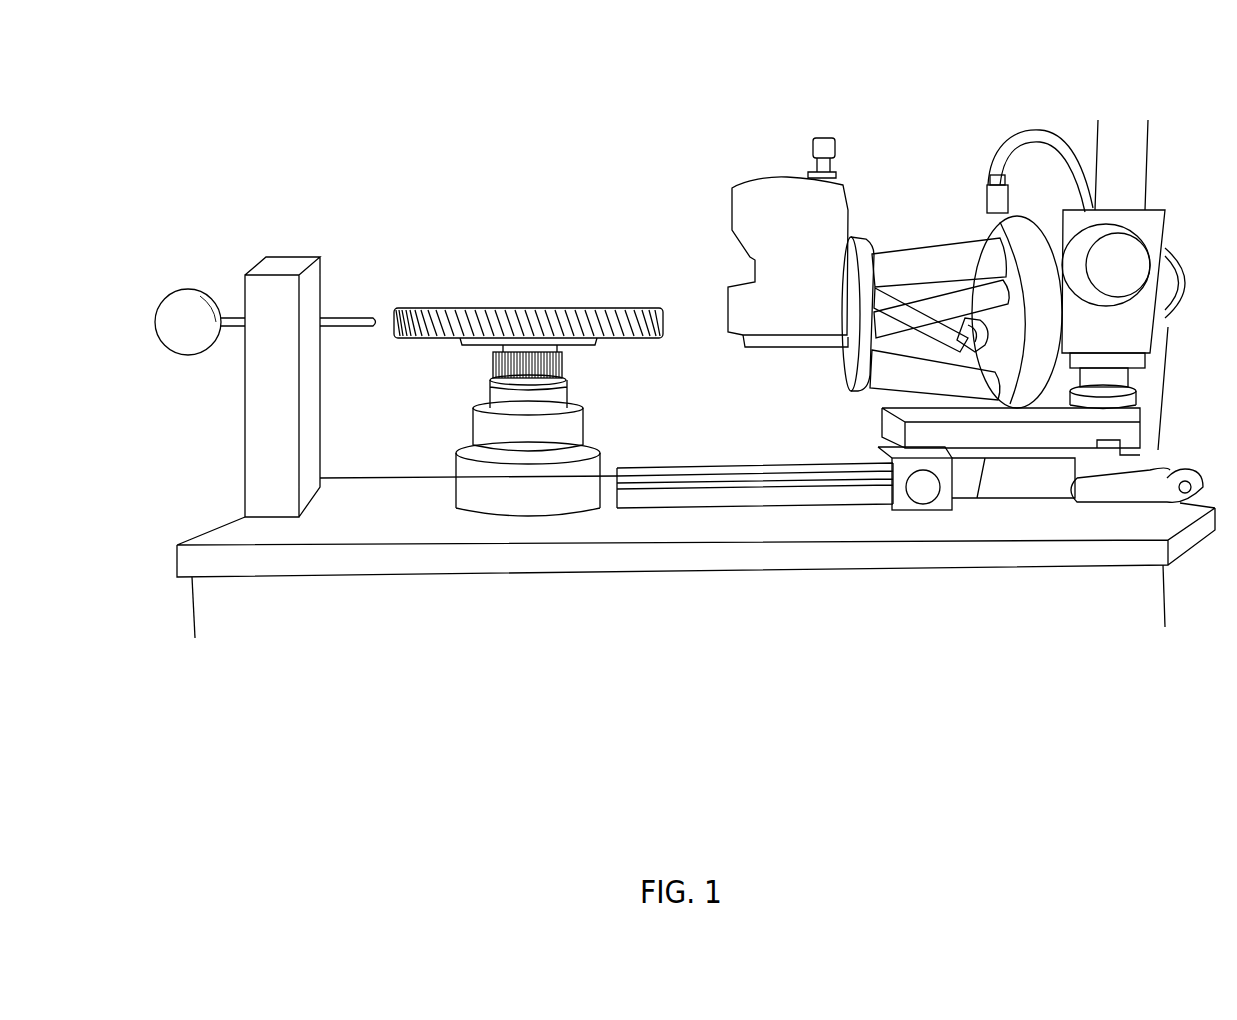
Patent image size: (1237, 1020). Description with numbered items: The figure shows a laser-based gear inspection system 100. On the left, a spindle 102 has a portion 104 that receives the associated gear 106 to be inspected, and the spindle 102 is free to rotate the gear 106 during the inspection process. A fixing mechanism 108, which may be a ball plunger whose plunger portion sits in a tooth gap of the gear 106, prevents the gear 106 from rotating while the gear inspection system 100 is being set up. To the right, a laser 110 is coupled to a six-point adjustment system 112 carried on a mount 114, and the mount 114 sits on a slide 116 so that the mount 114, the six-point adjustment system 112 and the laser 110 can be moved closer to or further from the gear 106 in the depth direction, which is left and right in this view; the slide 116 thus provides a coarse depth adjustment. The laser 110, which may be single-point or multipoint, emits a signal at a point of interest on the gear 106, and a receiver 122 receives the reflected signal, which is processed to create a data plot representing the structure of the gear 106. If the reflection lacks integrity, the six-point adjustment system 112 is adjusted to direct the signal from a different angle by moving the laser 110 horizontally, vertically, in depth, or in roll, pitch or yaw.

The gear inspection system 100 is at (270, 63).
The spindle 102 is at (612, 422).
The portion 104 is at (500, 398).
The gear 106 is at (512, 315).
The fixing mechanism 108 is at (160, 284).
The laser 110 is at (753, 198).
The six-point adjustment system 112 is at (970, 118).
The mount 114 is at (1117, 428).
The slide 116 is at (757, 497).
The receiver 122 is at (716, 299).